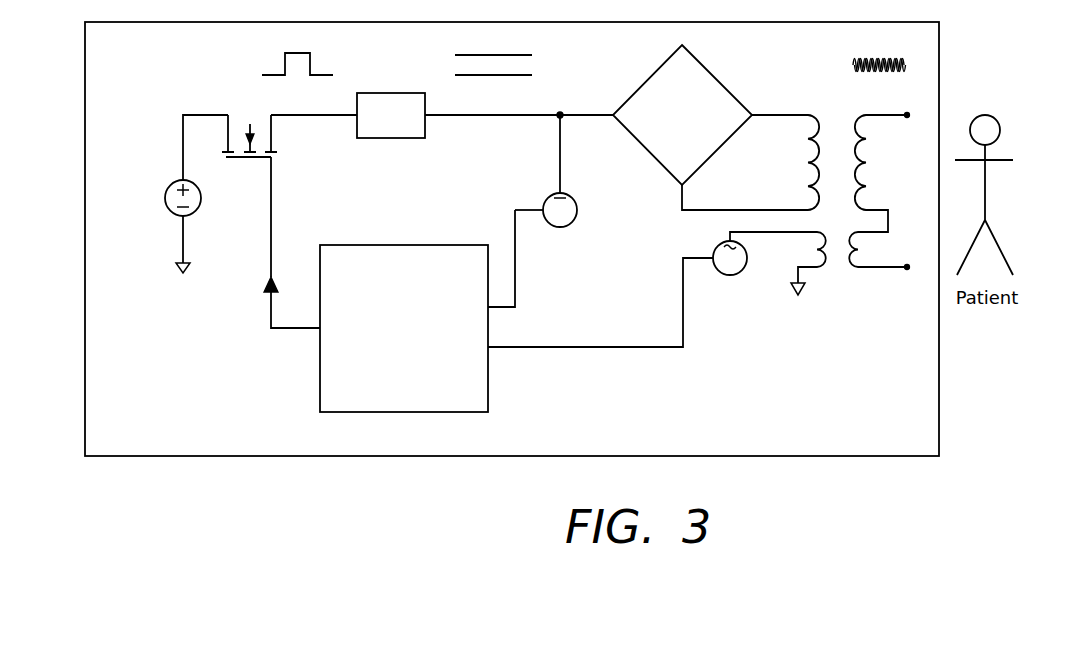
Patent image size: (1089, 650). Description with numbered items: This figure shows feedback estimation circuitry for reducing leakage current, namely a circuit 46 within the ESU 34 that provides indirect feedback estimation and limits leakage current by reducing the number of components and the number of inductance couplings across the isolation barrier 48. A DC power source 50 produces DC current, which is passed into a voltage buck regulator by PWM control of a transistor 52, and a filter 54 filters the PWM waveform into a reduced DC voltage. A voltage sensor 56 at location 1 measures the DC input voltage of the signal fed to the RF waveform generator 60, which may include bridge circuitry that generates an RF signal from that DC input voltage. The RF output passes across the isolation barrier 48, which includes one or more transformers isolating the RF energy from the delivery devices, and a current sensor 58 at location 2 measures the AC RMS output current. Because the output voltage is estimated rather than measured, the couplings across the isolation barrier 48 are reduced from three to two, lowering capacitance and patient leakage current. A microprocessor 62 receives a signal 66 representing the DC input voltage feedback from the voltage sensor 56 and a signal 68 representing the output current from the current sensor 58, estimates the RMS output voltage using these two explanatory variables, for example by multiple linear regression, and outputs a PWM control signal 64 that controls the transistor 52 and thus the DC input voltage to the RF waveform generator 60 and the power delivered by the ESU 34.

The ESU 34 is at (815, 458).
The circuit 46 is at (195, 321).
The isolation barrier 48 is at (853, 285).
The DC power source 50 is at (172, 184).
The transistor 52 is at (240, 132).
The filter 54 is at (393, 138).
The voltage sensor 56 is at (563, 186).
The current sensor 58 is at (757, 270).
The RF waveform generator 60 is at (717, 150).
The microprocessor 62 is at (440, 412).
The PWM control signal 64 is at (264, 291).
The signal 66 is at (498, 308).
The signal 68 is at (620, 347).
The location 1 is at (529, 196).
The location 2 is at (757, 243).